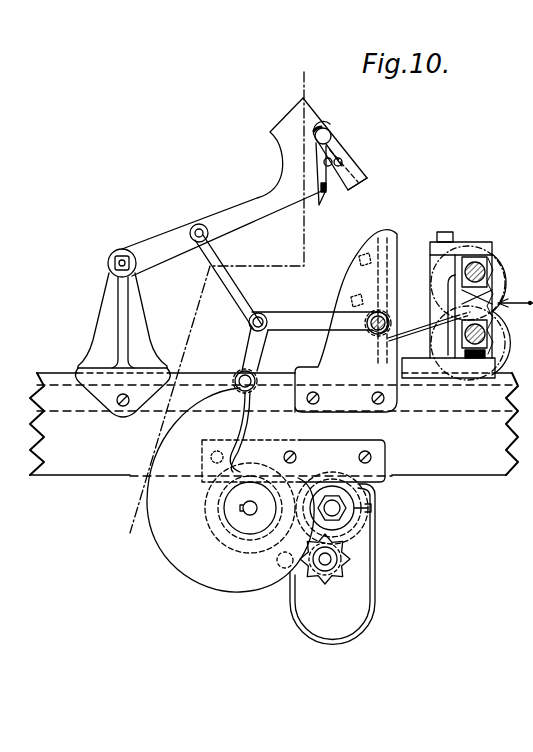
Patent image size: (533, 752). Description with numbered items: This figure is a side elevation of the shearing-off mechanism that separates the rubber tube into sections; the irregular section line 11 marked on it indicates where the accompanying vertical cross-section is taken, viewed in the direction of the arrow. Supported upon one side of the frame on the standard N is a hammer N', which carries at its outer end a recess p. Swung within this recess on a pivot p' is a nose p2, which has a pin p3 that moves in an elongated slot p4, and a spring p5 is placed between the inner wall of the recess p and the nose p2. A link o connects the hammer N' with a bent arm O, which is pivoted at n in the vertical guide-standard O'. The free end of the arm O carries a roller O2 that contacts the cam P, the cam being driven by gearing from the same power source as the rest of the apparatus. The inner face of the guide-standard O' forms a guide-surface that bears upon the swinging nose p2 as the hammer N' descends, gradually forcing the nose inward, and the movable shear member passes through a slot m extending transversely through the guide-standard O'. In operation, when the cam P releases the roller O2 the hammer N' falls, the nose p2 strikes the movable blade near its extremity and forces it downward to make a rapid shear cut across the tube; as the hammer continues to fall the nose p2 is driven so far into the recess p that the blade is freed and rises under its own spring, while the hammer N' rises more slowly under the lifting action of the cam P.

The irregular section line 11 is at (280, 68).
The standard N is at (108, 333).
The hammer N' is at (244, 187).
The recess p is at (355, 165).
The pivot p' is at (336, 125).
The nose p2 is at (360, 177).
The pin p3 is at (344, 160).
The elongated slot p4 is at (336, 132).
The spring p5 is at (320, 207).
The link o is at (226, 284).
The bent arm O is at (315, 328).
The roller O2 is at (238, 372).
The vertical guide-standard O' is at (368, 346).
The pivot n is at (386, 315).
The slot m is at (355, 285).
The cam P is at (223, 577).